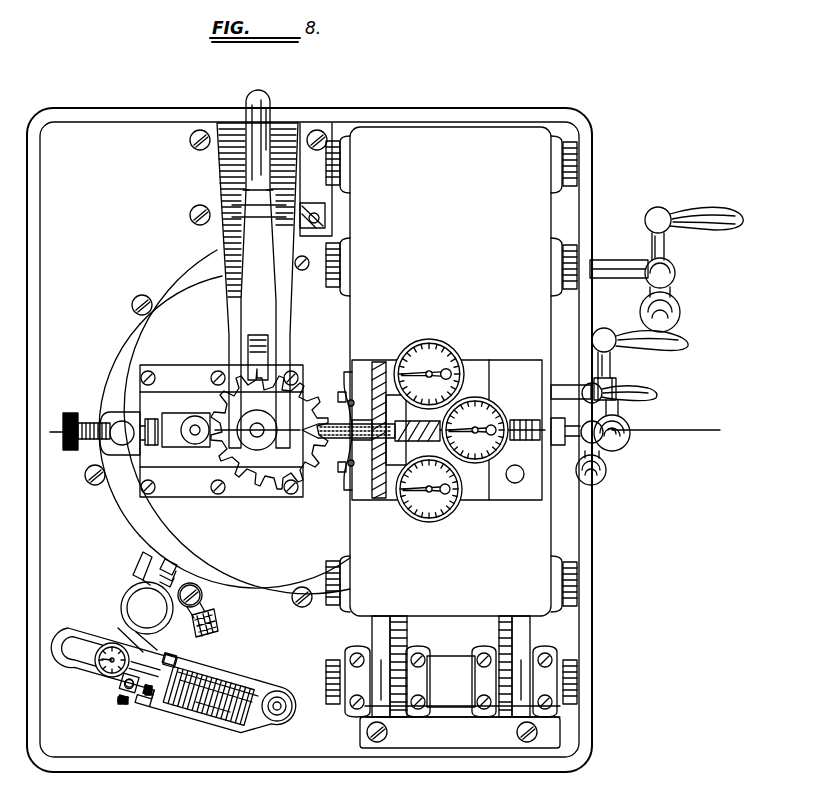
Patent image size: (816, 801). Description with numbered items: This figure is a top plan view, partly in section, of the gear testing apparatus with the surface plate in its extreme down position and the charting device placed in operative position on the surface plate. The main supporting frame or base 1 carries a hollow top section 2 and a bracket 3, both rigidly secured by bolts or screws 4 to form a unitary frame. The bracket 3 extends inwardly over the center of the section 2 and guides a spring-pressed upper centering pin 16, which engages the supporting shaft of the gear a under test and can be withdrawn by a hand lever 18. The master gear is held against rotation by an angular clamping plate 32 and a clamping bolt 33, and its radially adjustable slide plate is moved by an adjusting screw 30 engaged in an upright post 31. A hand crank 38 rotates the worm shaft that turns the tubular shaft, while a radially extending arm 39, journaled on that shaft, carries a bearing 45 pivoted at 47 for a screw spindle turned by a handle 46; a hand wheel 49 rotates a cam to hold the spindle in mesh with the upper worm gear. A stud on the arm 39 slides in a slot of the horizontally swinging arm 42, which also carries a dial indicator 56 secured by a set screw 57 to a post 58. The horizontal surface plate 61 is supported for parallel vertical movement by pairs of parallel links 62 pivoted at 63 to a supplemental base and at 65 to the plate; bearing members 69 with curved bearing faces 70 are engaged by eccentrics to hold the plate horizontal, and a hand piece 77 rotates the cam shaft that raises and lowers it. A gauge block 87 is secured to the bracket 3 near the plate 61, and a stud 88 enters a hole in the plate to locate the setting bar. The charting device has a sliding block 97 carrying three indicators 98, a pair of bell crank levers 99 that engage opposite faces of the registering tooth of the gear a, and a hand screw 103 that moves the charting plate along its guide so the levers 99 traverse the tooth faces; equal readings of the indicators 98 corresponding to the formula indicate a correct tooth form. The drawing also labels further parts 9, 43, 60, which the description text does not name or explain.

The main supporting frame or base 1 is at (88, 128).
The hollow top section 2 is at (128, 348).
The bracket 3 is at (306, 125).
The bolts or screws 4 is at (200, 132).
The axis line 9 is at (379, 439).
The centering pin 16 is at (262, 440).
The hand lever 18 is at (258, 104).
The adjusting screw 30 is at (70, 411).
The upright post 31 is at (116, 440).
The angular clamping plate 32 is at (168, 422).
The clamping bolt 33 is at (195, 445).
The gear under test a is at (258, 465).
The hand crank 38 is at (664, 242).
The radially extending arm 39 is at (121, 630).
The horizontally swinging arm 42 is at (74, 638).
The pivot 43 is at (280, 696).
The bearing 45 is at (142, 556).
The handle 46 is at (219, 623).
The pivot 47 is at (203, 596).
The hand wheel 49 is at (132, 598).
The dial indicator 56 is at (100, 670).
The set screw 57 is at (124, 706).
The post 58 is at (123, 688).
The pointer 60 is at (167, 666).
The surface plate 61 is at (476, 184).
The parallel links 62 is at (381, 625).
The pivots 63 is at (578, 263).
The pivots 65 is at (577, 165).
The bearing members 69 is at (500, 684).
The curved bearing faces 70 is at (398, 625).
The hand piece 77 is at (612, 363).
The gauge block 87 is at (318, 222).
The stud 88 is at (515, 484).
The sliding block 97 is at (390, 362).
The indicators 98 is at (429, 345).
The bell crank levers 99 is at (346, 396).
The hand screw 103 is at (618, 446).